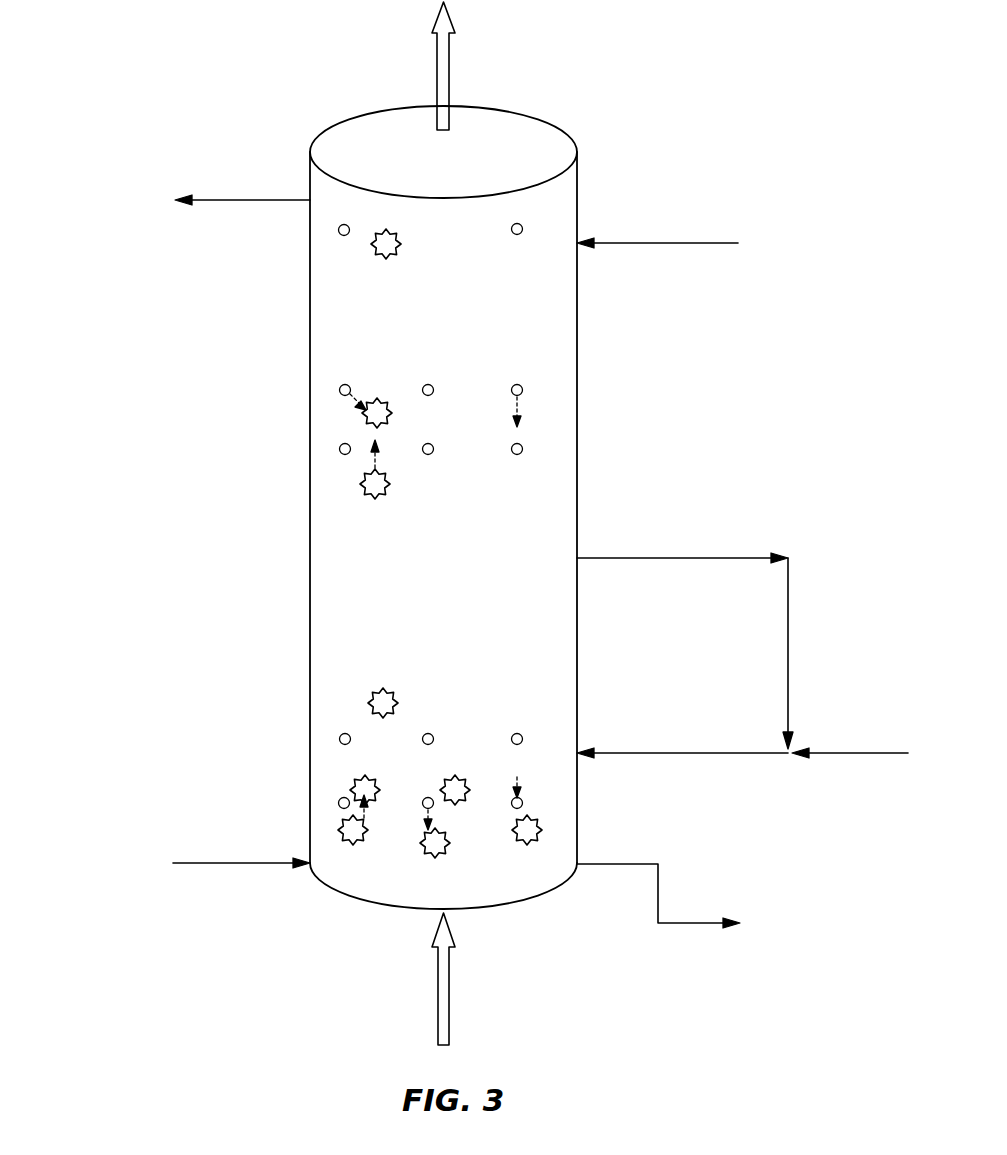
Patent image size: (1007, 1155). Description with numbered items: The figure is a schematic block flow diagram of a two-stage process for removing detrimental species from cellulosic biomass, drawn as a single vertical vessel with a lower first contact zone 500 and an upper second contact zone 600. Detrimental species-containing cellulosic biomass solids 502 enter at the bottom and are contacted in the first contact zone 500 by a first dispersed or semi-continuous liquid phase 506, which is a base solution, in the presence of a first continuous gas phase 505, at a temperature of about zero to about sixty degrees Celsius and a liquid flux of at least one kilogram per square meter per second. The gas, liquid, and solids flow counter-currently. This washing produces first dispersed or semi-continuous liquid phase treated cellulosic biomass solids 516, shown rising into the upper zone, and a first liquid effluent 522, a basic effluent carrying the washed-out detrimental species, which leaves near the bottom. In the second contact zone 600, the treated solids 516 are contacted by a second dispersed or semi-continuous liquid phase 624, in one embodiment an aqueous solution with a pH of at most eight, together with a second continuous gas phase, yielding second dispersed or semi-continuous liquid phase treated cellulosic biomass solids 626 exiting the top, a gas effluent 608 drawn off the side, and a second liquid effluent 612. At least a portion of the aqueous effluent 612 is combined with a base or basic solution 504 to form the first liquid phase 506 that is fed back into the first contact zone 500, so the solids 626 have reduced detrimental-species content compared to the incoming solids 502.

The second contact zone 600 is at (465, 287).
The first contact zone 500 is at (466, 685).
The second dispersed or semi-continuous liquid phase treated cellulosic biomass soli 626 is at (450, 82).
The gas effluent 608 is at (213, 200).
The second dispersed or semi-continuous liquid phase 624 is at (647, 243).
The first dispersed or semi-continuous liquid phase treated cellulosic biomass solid 516 is at (380, 493).
The second liquid effluent 612 is at (647, 558).
The first dispersed or semi-continuous liquid phase 506 is at (647, 753).
The base or basic solution 504 is at (847, 753).
The first continuous gas phase 505 is at (213, 863).
The first liquid effluent 522 is at (647, 864).
The detrimental species-containing cellulosic biomass solids 502 is at (450, 997).